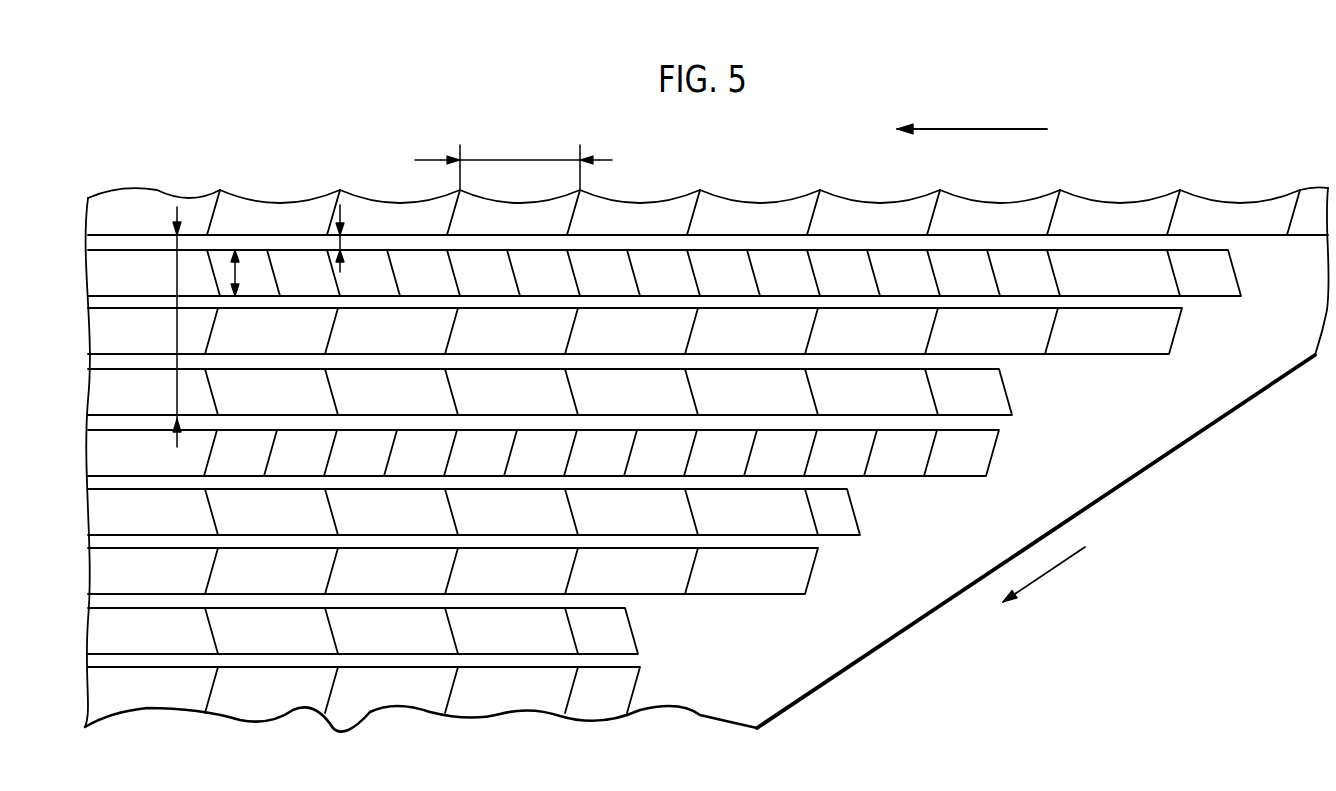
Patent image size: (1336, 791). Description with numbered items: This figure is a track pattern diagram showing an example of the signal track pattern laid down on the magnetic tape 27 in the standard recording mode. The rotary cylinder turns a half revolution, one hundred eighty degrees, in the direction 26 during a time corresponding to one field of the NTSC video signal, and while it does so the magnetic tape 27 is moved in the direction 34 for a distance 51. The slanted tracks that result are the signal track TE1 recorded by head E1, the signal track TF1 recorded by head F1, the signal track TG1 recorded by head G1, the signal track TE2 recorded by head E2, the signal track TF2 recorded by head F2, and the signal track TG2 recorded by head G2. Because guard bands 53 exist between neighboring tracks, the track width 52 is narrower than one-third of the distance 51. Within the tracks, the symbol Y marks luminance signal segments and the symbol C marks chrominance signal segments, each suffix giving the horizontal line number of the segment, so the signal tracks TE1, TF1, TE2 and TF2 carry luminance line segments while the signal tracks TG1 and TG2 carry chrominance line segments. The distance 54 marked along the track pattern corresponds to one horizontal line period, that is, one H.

The direction 26 is at (965, 129).
The magnetic tape 27 is at (830, 638).
The direction 34 is at (1042, 577).
The distance 51 is at (172, 277).
The track width 52 is at (240, 272).
The guard bands 53 is at (343, 237).
The distance 54 is at (488, 158).
The signal track TG2 is at (1232, 264).
The signal track TF2 is at (1175, 328).
The signal track TE2 is at (1006, 386).
The signal track TG1 is at (993, 453).
The signal track TF1 is at (860, 515).
The signal track TE1 is at (812, 570).